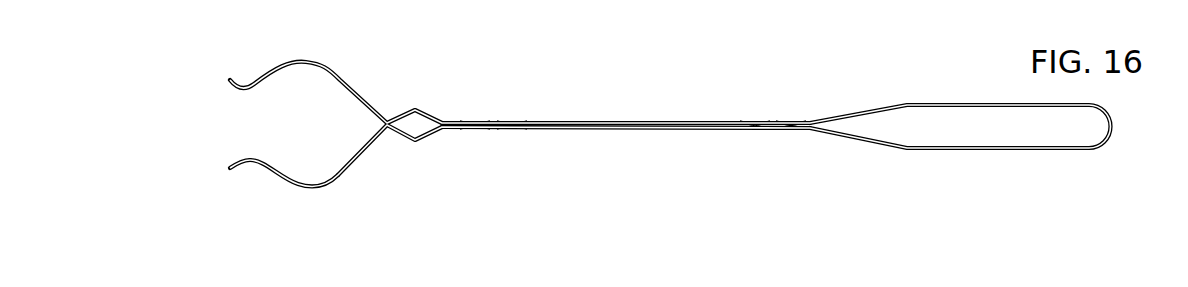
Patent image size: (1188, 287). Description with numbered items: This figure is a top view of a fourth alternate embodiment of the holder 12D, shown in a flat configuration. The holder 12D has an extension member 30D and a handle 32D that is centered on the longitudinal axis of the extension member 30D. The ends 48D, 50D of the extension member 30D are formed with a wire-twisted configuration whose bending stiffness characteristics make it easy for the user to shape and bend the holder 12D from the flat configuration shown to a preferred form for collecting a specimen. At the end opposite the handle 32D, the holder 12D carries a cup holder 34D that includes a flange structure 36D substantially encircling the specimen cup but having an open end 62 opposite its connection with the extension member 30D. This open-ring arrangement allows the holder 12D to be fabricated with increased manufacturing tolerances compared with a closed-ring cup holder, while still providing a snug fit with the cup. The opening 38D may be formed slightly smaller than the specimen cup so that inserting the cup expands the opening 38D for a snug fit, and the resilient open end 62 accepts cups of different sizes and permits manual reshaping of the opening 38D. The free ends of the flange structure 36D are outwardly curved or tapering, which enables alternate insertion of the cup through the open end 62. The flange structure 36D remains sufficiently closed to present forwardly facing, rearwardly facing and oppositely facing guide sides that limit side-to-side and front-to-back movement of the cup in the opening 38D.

The holder 12D is at (650, 146).
The extension member 30D is at (699, 122).
The handle 32D is at (913, 152).
The cup holder 34D is at (447, 122).
The flange structure 36D is at (362, 155).
The opening 38D is at (335, 167).
The end of extension member 48D is at (522, 122).
The end of extension member 50D is at (777, 125).
The open end 62 is at (235, 170).